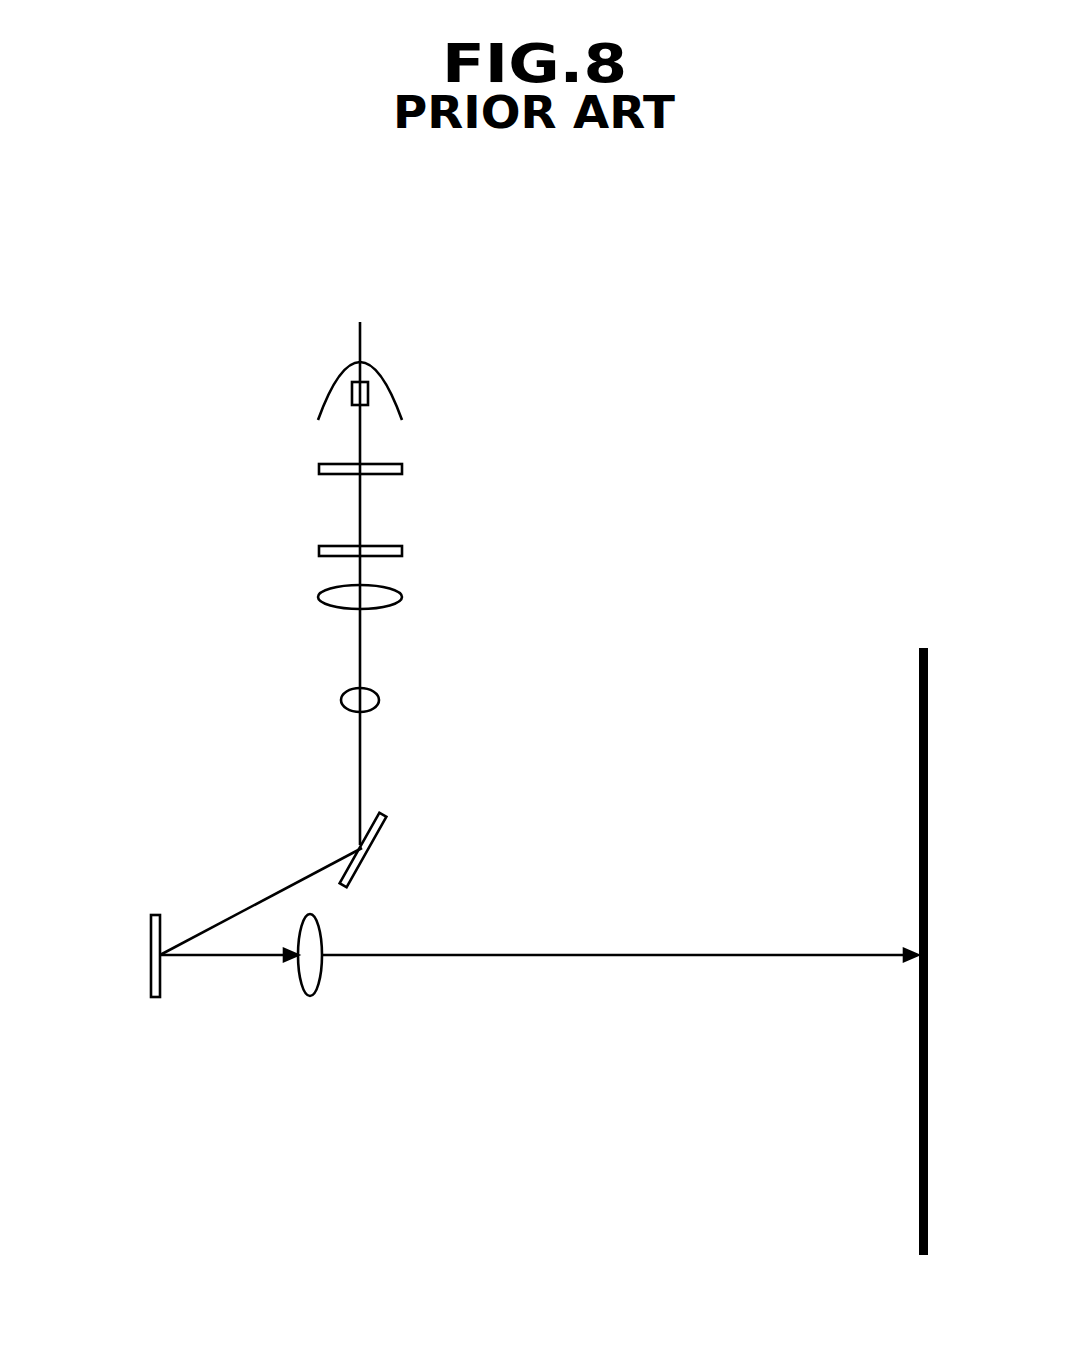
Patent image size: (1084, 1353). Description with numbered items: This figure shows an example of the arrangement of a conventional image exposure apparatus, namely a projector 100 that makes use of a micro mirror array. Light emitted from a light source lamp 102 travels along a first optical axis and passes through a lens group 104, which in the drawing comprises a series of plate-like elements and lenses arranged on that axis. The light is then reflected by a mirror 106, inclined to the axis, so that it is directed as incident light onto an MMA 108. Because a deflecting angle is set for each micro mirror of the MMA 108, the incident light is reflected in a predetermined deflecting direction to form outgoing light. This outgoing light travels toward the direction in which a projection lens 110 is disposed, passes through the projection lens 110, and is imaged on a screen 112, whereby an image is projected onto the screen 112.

The projector 100 is at (632, 383).
The light source lamp 102 is at (368, 390).
The lens group 104 is at (408, 463).
The mirror 106 is at (372, 848).
The MMA 108 is at (151, 952).
The projection lens 110 is at (322, 987).
The screen 112 is at (927, 658).